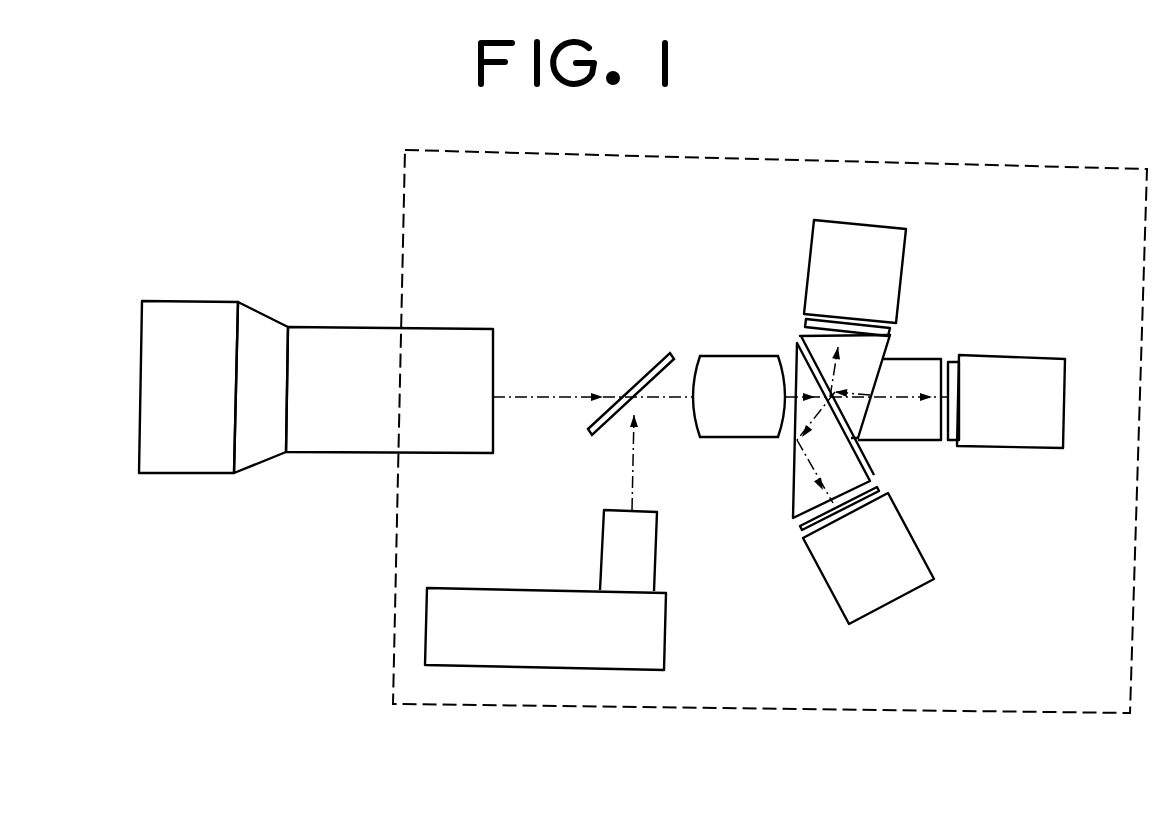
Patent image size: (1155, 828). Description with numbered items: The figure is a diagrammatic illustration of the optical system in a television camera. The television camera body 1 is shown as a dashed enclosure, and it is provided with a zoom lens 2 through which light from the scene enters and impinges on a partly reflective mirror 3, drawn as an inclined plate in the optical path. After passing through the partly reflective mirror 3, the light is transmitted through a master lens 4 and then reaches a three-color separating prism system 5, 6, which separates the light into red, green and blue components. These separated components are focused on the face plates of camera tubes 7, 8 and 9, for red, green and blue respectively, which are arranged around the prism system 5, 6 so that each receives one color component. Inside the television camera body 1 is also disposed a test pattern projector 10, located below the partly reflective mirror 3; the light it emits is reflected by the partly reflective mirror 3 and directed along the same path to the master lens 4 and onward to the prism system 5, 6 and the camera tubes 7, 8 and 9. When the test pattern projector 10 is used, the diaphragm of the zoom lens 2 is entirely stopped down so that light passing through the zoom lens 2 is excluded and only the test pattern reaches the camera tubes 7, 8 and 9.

The television camera body 1 is at (908, 163).
The zoom lens 2 is at (265, 323).
The partly reflective mirror 3 is at (650, 370).
The master lens 4 is at (740, 363).
The three-color separating prism system (first prism) 5 is at (800, 488).
The three-color separating prism system (second prism) 6 is at (870, 358).
The camera tube 7 is at (827, 248).
The camera tube 8 is at (1032, 370).
The camera tube 9 is at (897, 543).
The test pattern projector 10 is at (537, 588).